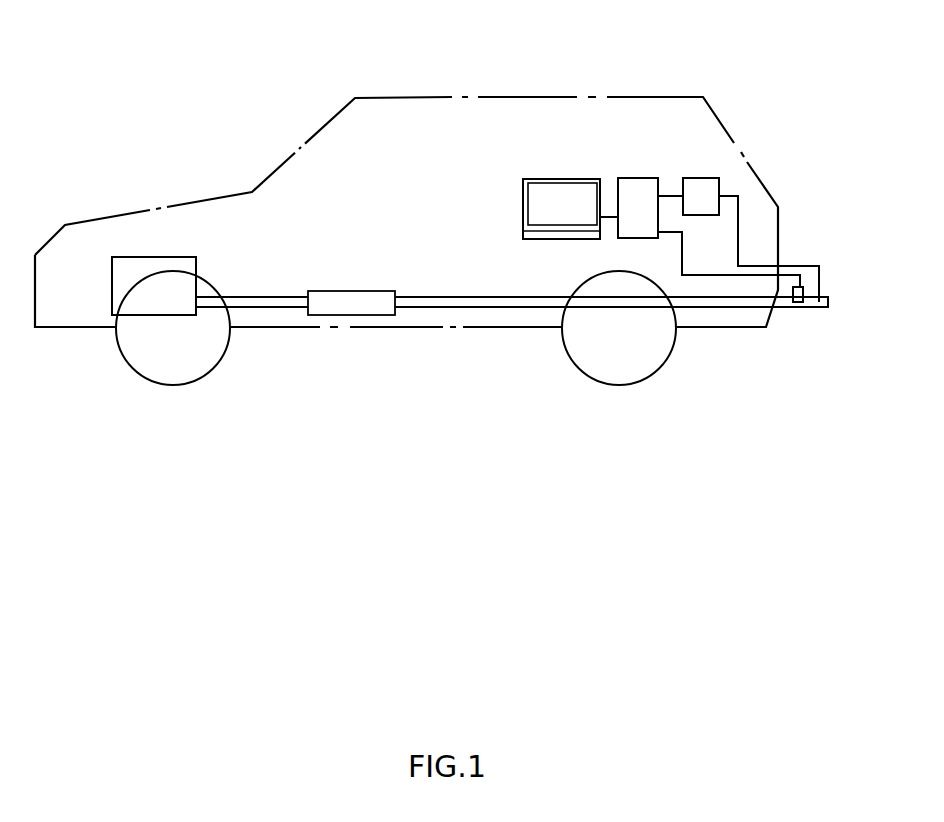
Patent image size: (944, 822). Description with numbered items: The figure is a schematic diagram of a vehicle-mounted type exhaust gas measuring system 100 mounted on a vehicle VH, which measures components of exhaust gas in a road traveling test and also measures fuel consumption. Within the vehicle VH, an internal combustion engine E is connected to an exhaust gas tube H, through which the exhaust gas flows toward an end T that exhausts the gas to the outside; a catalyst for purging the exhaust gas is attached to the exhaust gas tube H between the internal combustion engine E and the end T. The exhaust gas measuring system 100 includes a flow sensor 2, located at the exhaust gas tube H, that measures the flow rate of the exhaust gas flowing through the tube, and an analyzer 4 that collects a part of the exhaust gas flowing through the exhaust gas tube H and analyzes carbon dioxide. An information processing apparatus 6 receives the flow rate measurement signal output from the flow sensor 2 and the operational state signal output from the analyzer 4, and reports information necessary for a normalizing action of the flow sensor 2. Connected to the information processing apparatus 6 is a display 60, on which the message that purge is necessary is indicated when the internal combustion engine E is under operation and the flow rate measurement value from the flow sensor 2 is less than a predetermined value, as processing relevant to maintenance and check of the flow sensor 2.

The vehicle VH is at (383, 97).
The exhaust gas measuring system 100 is at (729, 147).
The internal combustion engine E is at (172, 257).
The exhaust gas tube H is at (440, 296).
The end T is at (810, 310).
The display 60 is at (523, 205).
The information processing apparatus 6 is at (640, 178).
The analyzer 4 is at (700, 178).
The flow sensor 2 is at (810, 282).